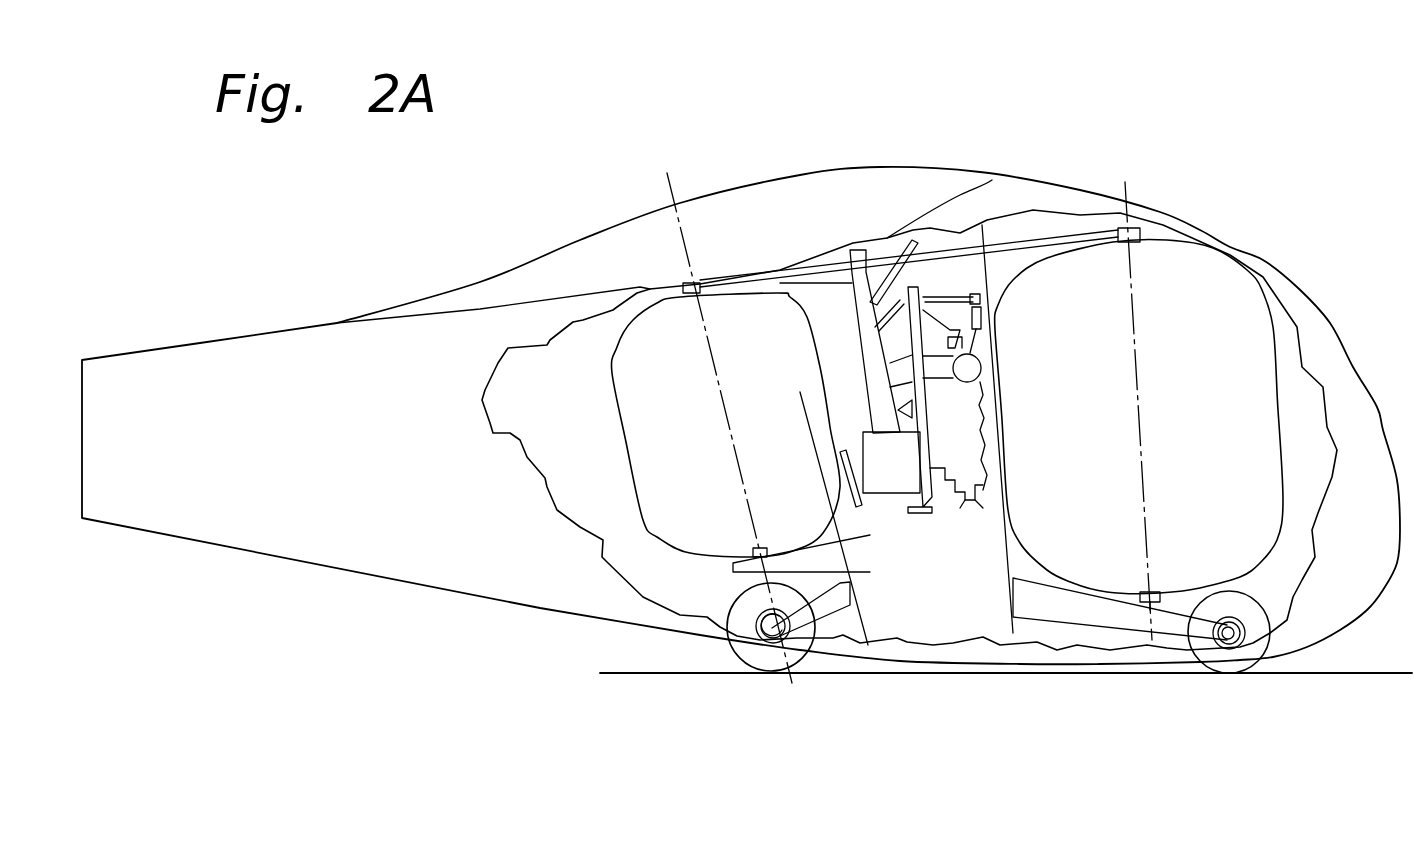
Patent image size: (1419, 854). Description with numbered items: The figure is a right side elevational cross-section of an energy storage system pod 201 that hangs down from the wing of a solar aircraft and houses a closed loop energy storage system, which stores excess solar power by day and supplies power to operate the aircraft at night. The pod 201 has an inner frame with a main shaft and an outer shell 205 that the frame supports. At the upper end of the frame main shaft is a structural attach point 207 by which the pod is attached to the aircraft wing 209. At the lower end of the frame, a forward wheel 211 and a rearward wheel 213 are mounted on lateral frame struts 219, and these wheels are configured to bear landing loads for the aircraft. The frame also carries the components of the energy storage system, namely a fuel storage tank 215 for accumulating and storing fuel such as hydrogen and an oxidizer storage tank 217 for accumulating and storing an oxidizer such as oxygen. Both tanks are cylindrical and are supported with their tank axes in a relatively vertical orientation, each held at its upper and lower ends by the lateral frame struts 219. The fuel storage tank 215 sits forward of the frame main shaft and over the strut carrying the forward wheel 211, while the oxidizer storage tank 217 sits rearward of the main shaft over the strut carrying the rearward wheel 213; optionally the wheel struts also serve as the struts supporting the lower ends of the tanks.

The pod 201 is at (443, 673).
The outer shell 205 is at (601, 553).
The structural attach point 207 is at (879, 248).
The aircraft wing 209 is at (797, 200).
The forward wheel 211 is at (1255, 662).
The rearward wheel 213 is at (788, 662).
The fuel storage tank 215 is at (1178, 297).
The oxidizer storage tank 217 is at (643, 445).
The lateral frame struts 219 is at (1090, 615).